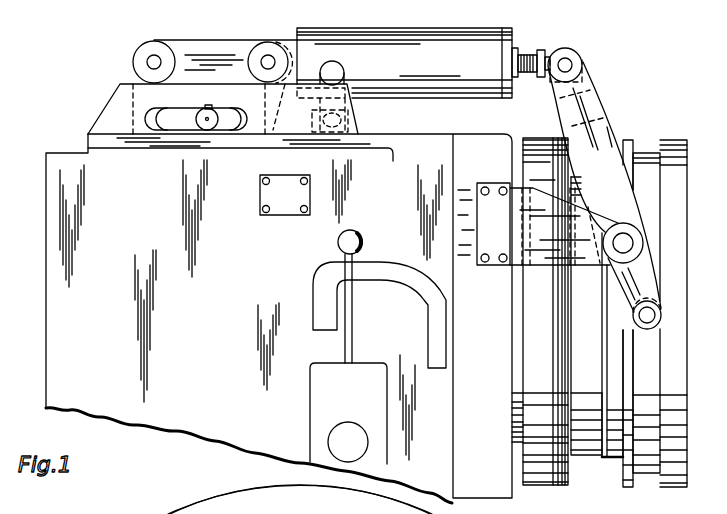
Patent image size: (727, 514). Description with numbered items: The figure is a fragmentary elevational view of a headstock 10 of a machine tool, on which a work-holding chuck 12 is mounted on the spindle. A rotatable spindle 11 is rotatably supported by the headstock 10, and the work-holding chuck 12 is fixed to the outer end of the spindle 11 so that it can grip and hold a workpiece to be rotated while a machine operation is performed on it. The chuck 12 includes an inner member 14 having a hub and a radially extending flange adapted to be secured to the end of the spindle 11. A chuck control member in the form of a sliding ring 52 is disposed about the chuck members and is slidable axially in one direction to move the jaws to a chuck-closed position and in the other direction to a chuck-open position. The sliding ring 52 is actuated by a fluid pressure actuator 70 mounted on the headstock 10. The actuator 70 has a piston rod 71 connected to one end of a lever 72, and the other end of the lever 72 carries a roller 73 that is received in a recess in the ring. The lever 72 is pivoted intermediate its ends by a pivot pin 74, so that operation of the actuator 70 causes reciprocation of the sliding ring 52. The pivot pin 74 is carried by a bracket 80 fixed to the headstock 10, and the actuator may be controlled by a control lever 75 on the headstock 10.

The headstock 10 is at (68, 320).
The rotatable spindle 11 is at (519, 438).
The work-holding chuck 12 is at (612, 462).
The inner member 14 is at (537, 367).
The sliding ring 52 is at (650, 467).
The fluid pressure actuator 70 is at (437, 32).
The piston rod 71 is at (527, 56).
The lever 72 is at (605, 138).
The roller 73 is at (659, 316).
The pivot pin 74 is at (643, 246).
The control lever 75 is at (340, 250).
The bracket 80 is at (546, 268).